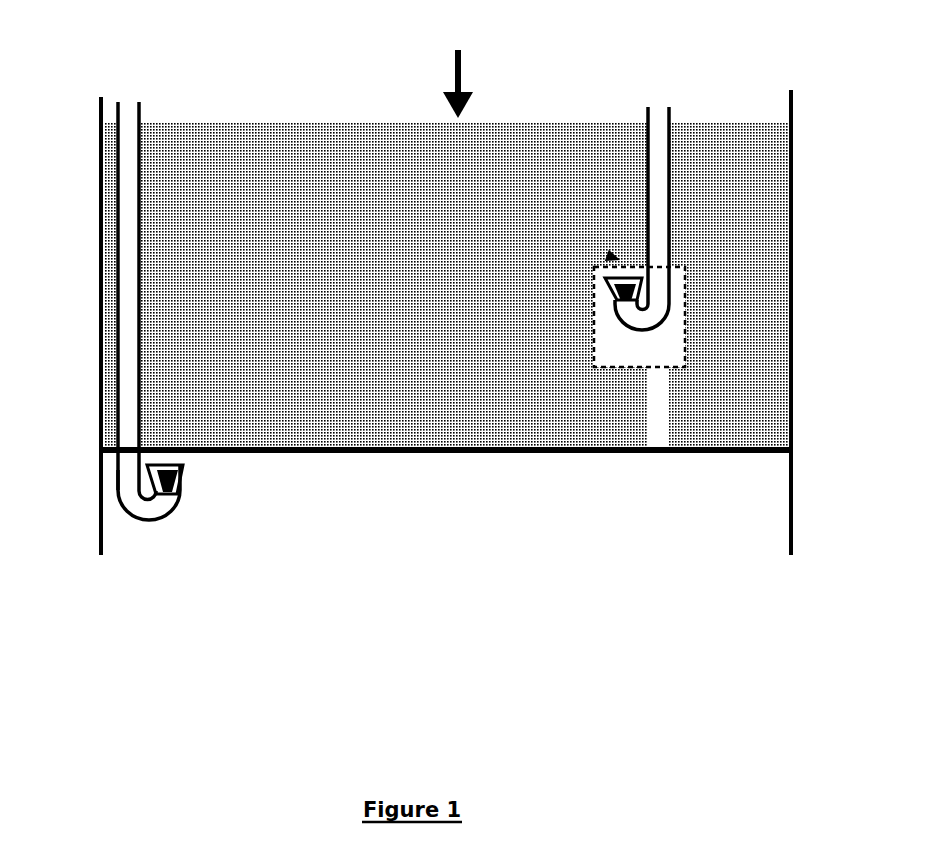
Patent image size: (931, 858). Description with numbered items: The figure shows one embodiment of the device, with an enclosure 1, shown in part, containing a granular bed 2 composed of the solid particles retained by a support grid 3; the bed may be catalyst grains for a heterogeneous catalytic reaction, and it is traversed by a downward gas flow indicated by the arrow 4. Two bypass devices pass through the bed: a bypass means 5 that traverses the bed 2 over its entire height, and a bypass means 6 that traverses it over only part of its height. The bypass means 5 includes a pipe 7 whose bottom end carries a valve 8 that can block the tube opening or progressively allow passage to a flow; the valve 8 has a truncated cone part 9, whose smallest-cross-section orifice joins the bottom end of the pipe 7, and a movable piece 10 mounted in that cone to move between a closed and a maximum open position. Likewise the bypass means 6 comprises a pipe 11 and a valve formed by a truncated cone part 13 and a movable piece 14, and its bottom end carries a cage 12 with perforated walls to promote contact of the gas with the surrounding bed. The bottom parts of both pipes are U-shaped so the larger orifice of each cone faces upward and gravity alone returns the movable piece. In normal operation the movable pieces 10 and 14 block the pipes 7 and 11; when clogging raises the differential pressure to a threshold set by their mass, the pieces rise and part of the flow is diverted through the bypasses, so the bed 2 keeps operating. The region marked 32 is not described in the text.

The enclosure 1 is at (793, 323).
The granular bed 2 is at (735, 233).
The support grid 3 is at (492, 453).
The arrow 4 is at (462, 73).
The bypass means 5 is at (156, 144).
The bypass means 6 is at (688, 131).
The pipe 7 is at (118, 196).
The valve 8 is at (196, 511).
The truncated cone part 9 is at (183, 471).
The movable piece 10 is at (157, 476).
The pipe 11 is at (673, 178).
The cage 12 is at (606, 255).
The truncated cone part 13 is at (597, 317).
The movable piece 14 is at (603, 278).
The annular gap 32 is at (118, 312).